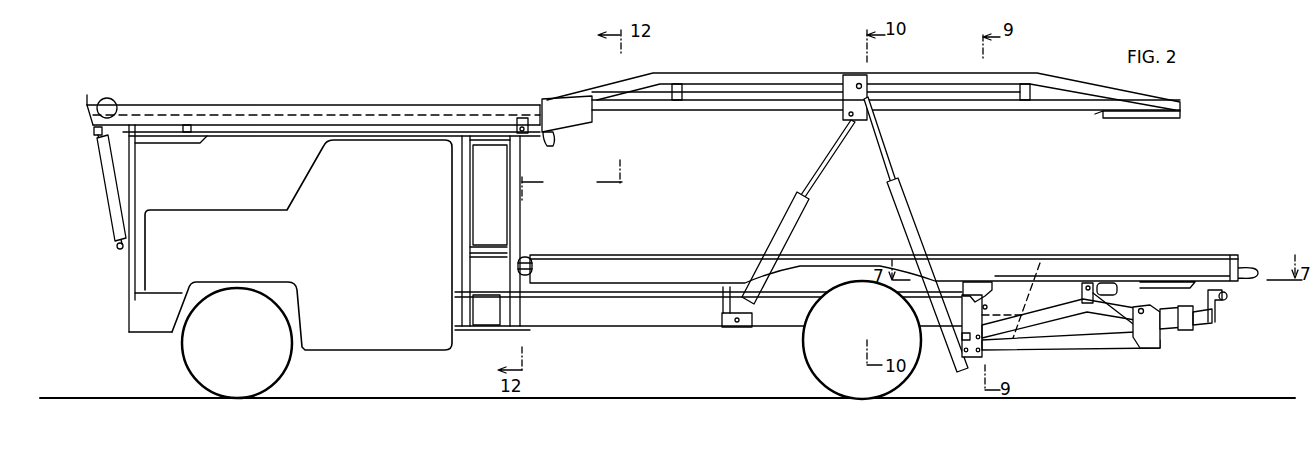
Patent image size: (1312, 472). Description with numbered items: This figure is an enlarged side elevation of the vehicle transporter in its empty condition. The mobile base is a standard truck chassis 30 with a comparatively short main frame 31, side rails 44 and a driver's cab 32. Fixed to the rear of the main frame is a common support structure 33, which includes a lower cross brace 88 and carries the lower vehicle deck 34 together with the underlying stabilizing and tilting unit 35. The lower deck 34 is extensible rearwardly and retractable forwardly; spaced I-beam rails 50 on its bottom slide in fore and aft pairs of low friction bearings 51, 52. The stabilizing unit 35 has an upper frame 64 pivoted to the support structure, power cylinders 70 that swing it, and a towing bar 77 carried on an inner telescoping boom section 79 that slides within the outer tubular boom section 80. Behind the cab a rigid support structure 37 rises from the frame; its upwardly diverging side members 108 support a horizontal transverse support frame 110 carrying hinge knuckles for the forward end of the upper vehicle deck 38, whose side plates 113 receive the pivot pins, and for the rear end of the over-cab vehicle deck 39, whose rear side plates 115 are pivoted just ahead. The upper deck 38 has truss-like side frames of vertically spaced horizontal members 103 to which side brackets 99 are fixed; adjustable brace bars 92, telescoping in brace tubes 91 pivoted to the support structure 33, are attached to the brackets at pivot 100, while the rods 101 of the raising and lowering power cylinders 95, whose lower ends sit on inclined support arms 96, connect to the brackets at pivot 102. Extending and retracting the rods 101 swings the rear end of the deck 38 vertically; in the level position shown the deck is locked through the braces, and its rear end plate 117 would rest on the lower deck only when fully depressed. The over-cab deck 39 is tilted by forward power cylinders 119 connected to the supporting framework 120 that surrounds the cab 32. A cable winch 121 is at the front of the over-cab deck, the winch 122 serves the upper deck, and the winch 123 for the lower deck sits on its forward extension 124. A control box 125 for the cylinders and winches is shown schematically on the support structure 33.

The truck chassis 30 is at (622, 328).
The main frame 31 is at (682, 328).
The driver's cab 32 is at (392, 205).
The common support structure 33 is at (985, 305).
The lower vehicle deck 34 is at (1058, 258).
The lower deck stabilizing and tilting unit 35 is at (1100, 350).
The rigid support structure 37 is at (512, 240).
The upper vehicle deck 38 is at (952, 74).
The over-cab vehicle deck 39 is at (339, 101).
The side rails 44 is at (672, 320).
The I-beam rails 50 is at (1100, 282).
The low friction bearings 51 is at (980, 275).
The low friction bearings 52 is at (1095, 282).
The upper frame 64 is at (1048, 320).
The power cylinders 70 is at (1150, 305).
The towing bar 77 is at (1227, 298).
The inner telescoping boom section 79 is at (1200, 328).
The outer tubular boom section 80 is at (1178, 330).
The lower cross brace 88 is at (960, 345).
The brace tubes 91 is at (903, 200).
The adjustable brace bars 92 is at (890, 160).
The power cylinders 95 is at (782, 218).
The side inclined support arms 96 is at (722, 328).
The side brackets 99 is at (846, 100).
The pivotal attachment 100 is at (859, 84).
The rods 101 is at (820, 168).
The pivotal connection 102 is at (853, 120).
The horizontal members 103 is at (745, 84).
The side members 108 is at (506, 215).
The horizontal transverse support frame 110 is at (500, 147).
The side plates 113 is at (565, 122).
The rear side plates 115 is at (522, 136).
The rear end plate 117 is at (1162, 119).
The forward power cylinders 119 is at (103, 160).
The supporting framework 120 is at (136, 190).
The cable winch 121 is at (115, 99).
The winch 122 is at (548, 146).
The winch 123 is at (525, 258).
The forward extension 124 is at (516, 268).
The control box 125 is at (1040, 262).